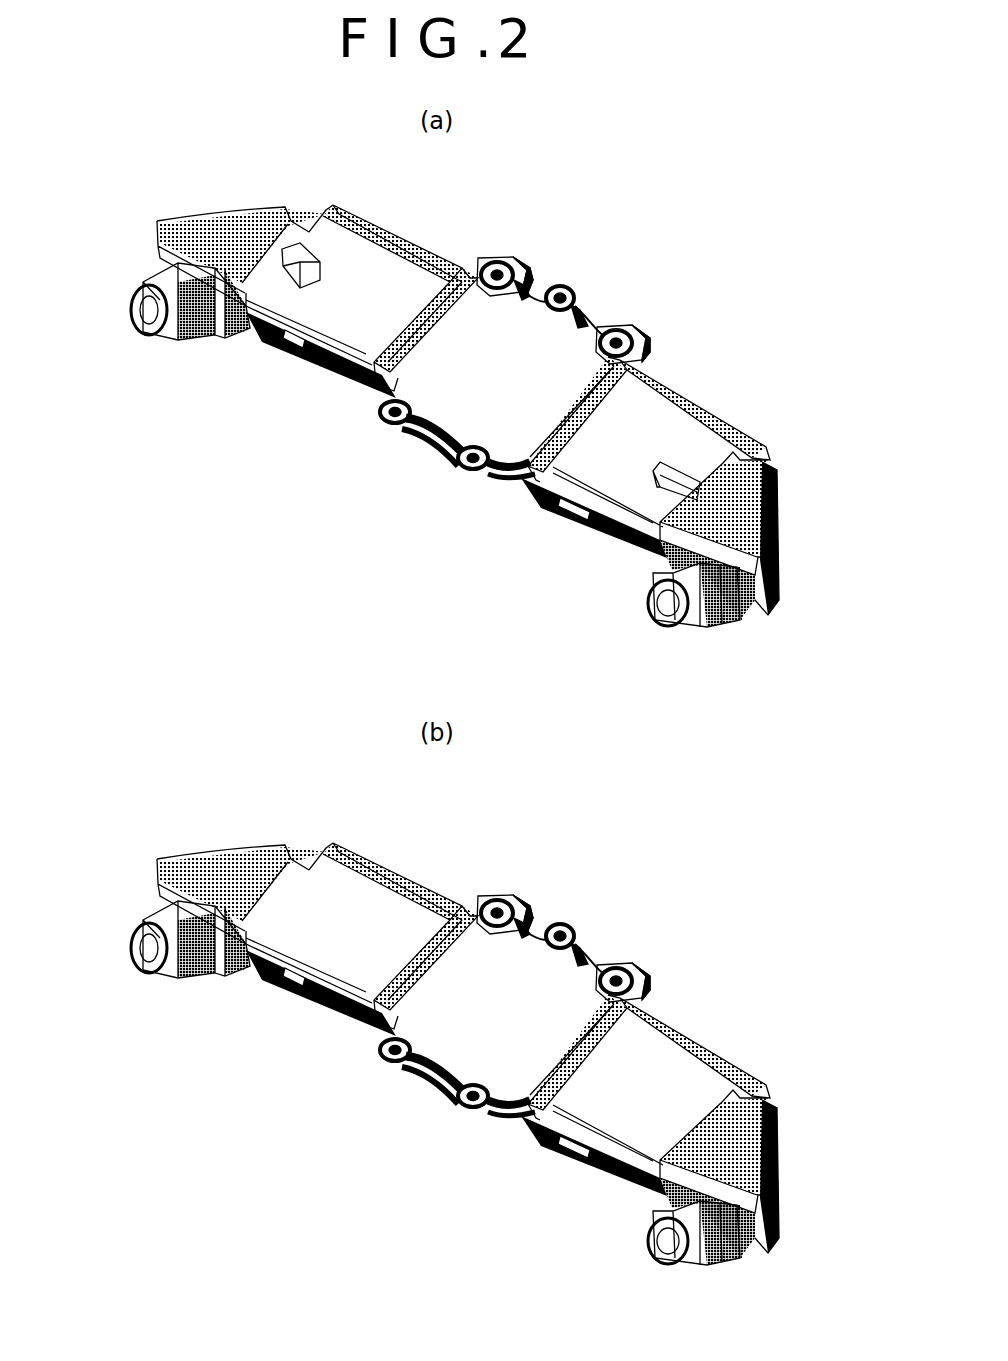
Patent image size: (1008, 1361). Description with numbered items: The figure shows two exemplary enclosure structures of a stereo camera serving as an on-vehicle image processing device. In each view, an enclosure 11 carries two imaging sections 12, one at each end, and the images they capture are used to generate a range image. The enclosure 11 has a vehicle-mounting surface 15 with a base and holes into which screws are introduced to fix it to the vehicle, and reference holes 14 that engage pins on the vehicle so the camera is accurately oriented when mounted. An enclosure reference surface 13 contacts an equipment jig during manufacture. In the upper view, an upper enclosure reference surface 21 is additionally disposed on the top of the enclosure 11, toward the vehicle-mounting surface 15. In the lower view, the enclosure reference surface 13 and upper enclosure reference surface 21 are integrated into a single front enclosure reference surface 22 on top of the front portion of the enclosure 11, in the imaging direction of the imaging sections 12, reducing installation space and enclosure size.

The enclosure 11 is at (627, 467).
The imaging section 12 is at (160, 282).
The enclosure reference surface 13 is at (314, 356).
The reference hole 14 is at (500, 268).
The vehicle-mounting surface 15 is at (564, 296).
The upper enclosure reference surface 21 is at (297, 272).
The front enclosure reference surface 22 is at (304, 982).